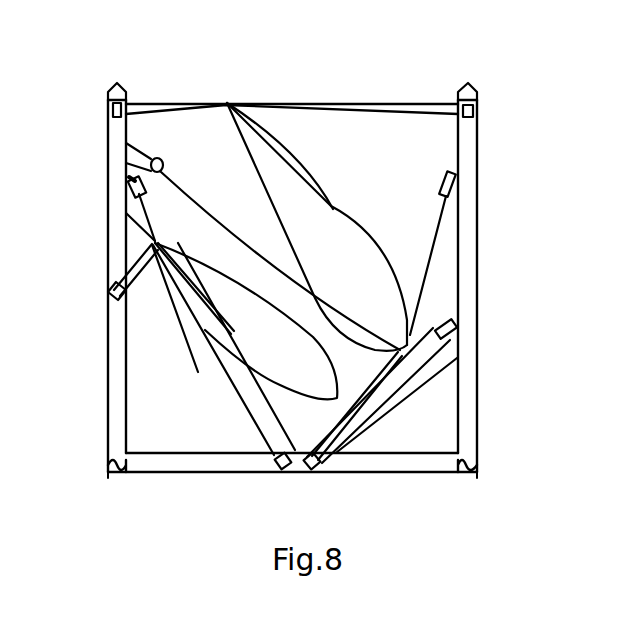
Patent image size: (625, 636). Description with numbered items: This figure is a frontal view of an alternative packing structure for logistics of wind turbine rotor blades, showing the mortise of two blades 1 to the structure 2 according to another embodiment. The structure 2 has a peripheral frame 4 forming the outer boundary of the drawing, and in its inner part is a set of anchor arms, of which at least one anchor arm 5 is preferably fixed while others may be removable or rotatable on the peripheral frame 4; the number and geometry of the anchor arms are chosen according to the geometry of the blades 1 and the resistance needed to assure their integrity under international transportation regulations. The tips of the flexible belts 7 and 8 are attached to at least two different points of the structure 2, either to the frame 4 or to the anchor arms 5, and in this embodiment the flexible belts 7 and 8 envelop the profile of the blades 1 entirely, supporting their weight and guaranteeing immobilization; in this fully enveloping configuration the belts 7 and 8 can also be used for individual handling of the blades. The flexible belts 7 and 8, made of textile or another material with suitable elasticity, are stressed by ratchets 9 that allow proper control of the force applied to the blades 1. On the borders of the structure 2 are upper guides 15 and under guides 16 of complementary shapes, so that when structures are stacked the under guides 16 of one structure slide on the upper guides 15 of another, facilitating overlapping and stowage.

The wind turbine rotor blade 1 is at (336, 250).
The structure 2 is at (305, 90).
The peripheral frame 4 is at (471, 391).
The anchor arm 5 is at (360, 427).
The flexible belt 7 is at (266, 417).
The flexible belt 8 is at (309, 174).
The ratchet 9 is at (112, 112).
The upper guide 15 is at (123, 86).
The under guide 16 is at (108, 474).